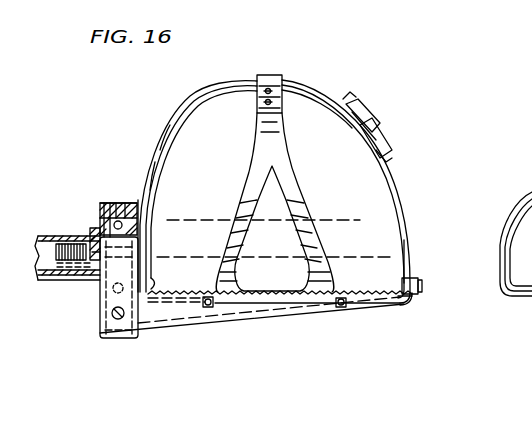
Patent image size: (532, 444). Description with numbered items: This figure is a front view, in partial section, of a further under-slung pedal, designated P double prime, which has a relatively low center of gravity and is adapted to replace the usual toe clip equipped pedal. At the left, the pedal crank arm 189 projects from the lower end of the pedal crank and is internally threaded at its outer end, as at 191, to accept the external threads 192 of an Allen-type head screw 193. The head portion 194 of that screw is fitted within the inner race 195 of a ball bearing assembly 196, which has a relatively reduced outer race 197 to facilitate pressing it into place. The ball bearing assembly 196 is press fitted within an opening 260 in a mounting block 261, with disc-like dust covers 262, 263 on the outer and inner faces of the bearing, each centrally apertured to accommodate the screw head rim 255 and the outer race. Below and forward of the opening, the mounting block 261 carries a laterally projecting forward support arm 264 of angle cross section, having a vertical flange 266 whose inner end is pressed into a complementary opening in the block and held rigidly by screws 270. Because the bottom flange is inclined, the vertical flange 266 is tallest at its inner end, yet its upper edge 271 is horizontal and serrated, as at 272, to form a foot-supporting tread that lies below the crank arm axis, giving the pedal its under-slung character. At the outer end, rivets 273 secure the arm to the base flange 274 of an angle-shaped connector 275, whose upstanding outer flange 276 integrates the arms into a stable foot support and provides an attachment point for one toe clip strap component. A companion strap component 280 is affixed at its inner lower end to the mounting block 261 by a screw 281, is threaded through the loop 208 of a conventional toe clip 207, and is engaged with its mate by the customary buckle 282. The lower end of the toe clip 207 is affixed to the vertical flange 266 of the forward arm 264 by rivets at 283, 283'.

The pedal crank arm 189 is at (53, 282).
The internal threads 191 is at (92, 240).
The external threads 192 is at (100, 222).
The head screw 193 is at (73, 272).
The head portion 194 is at (116, 203).
The inner race 195 is at (102, 203).
The ball bearing assembly 196 is at (106, 203).
The outer race 197 is at (162, 163).
The toe clip 207 is at (270, 138).
The loop 208 is at (276, 73).
The screw head rim 255 is at (142, 243).
The opening 260 is at (125, 203).
The mounting block 261 is at (110, 203).
The dust cover 262 is at (150, 190).
The dust cover 263 is at (100, 212).
The forward support arm 264 is at (237, 320).
The vertical flange 266 is at (187, 312).
The screw 270 is at (120, 322).
The upper edge 271 is at (367, 290).
The tread 272 is at (272, 290).
The rivet 273 is at (396, 307).
The base flange 274 is at (409, 300).
The connector 275 is at (422, 280).
The outer flange 276 is at (416, 294).
The strap component 280 is at (229, 88).
The screw 281 is at (148, 286).
The buckle 282 is at (376, 147).
The rivet 283 is at (215, 345).
The rivet 283' is at (345, 346).